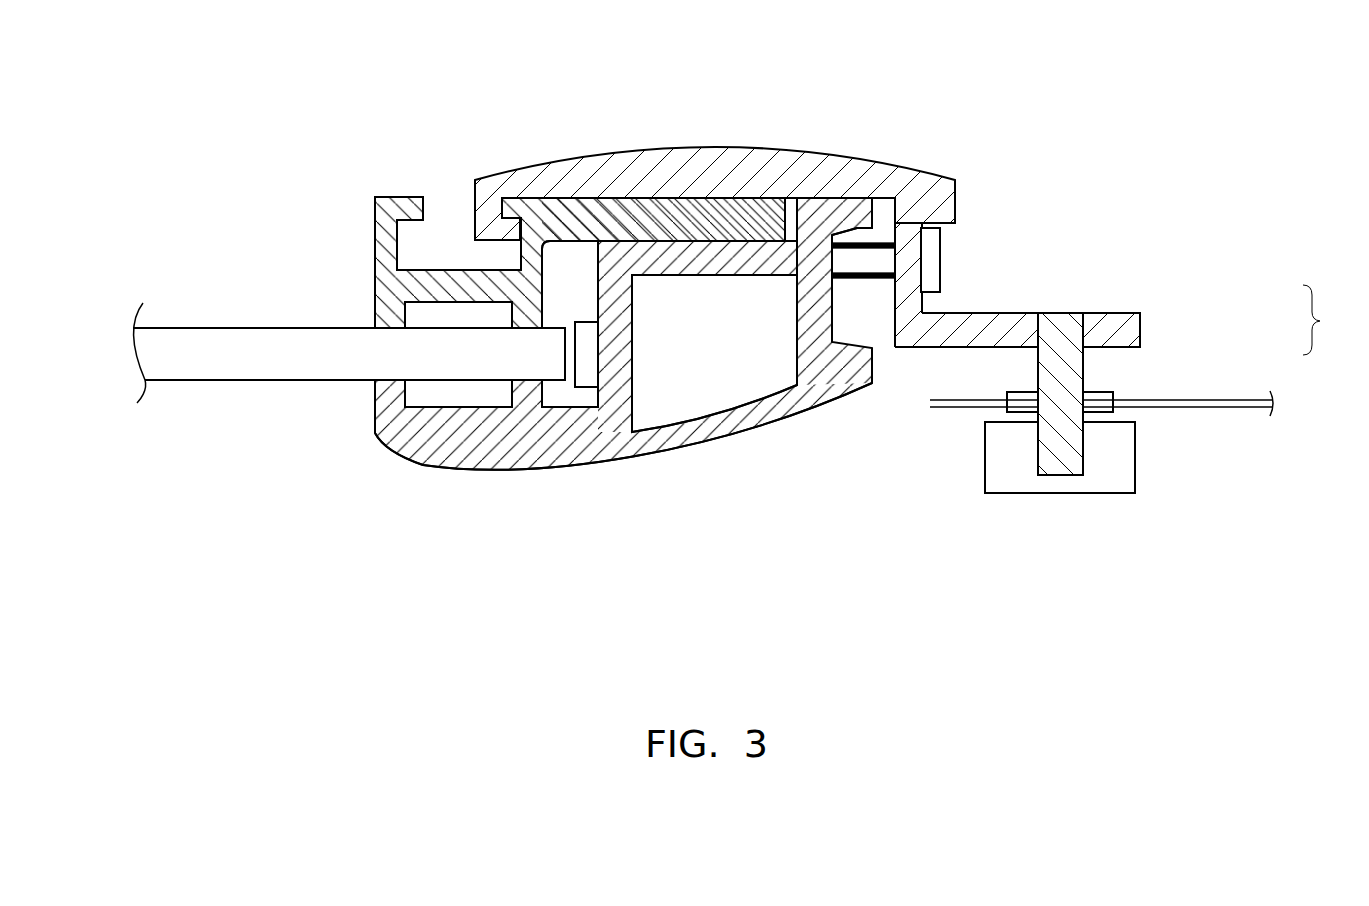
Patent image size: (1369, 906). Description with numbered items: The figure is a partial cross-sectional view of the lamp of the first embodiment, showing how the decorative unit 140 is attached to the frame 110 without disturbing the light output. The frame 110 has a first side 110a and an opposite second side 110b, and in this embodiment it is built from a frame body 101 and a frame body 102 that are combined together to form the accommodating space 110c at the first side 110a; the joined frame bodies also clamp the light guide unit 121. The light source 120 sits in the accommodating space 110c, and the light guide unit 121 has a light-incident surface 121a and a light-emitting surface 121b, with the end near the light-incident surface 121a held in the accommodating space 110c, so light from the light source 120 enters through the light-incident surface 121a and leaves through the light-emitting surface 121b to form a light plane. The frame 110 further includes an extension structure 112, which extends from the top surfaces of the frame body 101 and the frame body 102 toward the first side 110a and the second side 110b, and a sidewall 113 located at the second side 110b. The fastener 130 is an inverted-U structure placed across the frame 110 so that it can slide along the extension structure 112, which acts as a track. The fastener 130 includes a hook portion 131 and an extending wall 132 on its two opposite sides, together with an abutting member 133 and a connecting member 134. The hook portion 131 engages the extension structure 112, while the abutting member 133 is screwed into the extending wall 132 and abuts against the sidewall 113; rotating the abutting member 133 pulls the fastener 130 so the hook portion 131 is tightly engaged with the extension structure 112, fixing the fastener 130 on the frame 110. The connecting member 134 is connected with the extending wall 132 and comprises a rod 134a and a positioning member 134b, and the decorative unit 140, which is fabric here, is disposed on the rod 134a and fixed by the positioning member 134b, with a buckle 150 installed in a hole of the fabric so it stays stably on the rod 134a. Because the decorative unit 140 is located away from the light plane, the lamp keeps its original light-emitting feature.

The frame body 101 is at (703, 235).
The frame body 102 is at (793, 405).
The frame 110 is at (832, 553).
The first side 110a is at (358, 243).
The second side 110b is at (838, 287).
The accommodating space 110c is at (453, 395).
The extension structure 112 is at (478, 232).
The sidewall 113 is at (832, 320).
The light source 120 is at (590, 365).
The light guide unit 121 is at (198, 342).
The light-incident surface 121a is at (563, 357).
The light-emitting surface 121b is at (233, 385).
The fastener 130 is at (690, 163).
The hook portion 131 is at (505, 230).
The extending wall 132 is at (912, 305).
The abutting member 133 is at (933, 258).
The connecting member 134 is at (1335, 320).
The rod 134a is at (1077, 357).
The positioning member 134b is at (1113, 457).
The decorative unit 140 is at (1230, 407).
The buckle 150 is at (1007, 407).